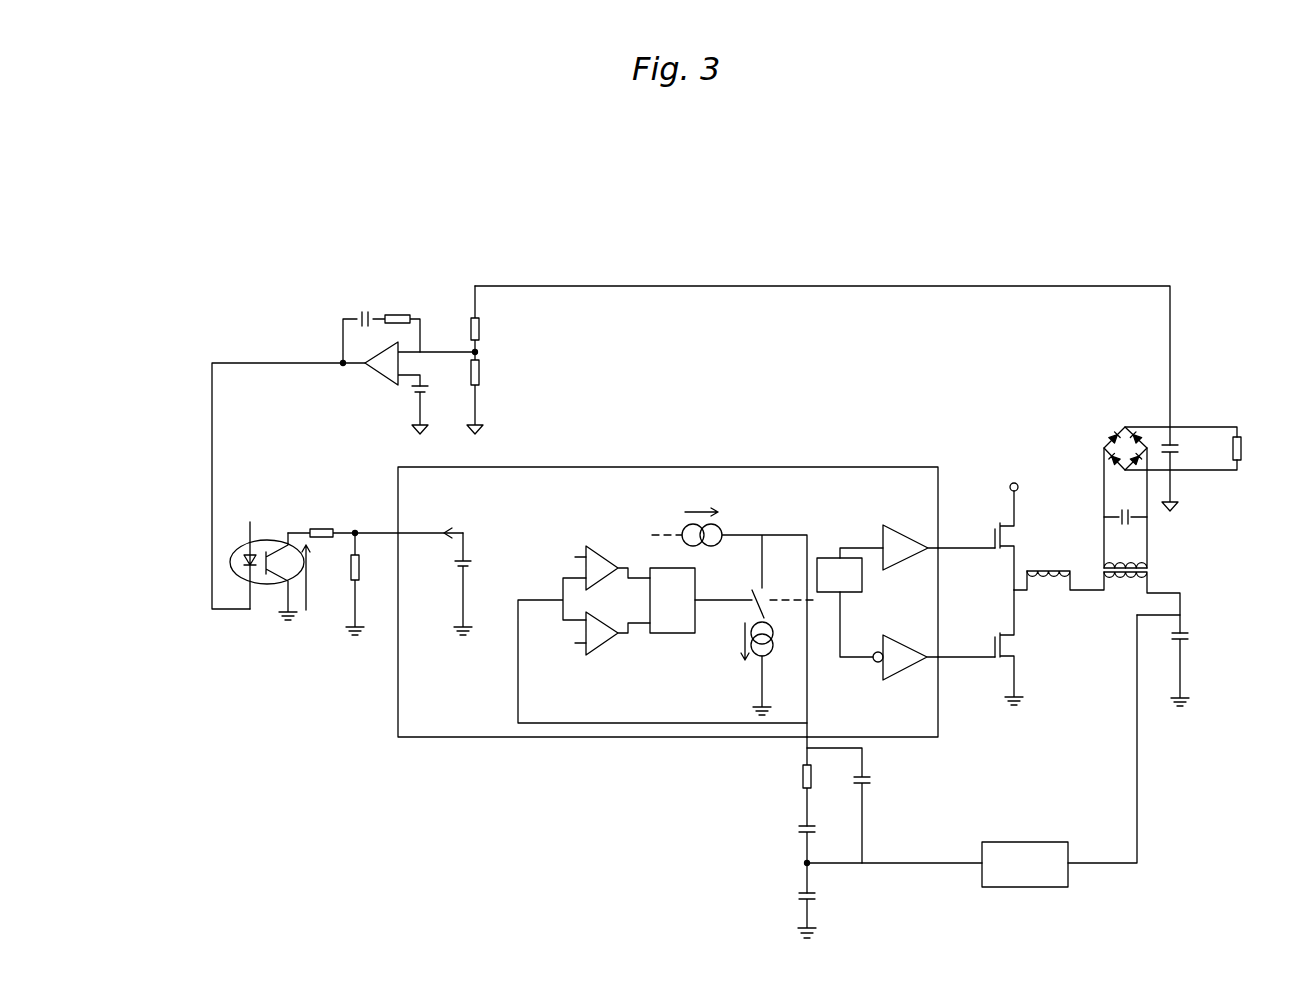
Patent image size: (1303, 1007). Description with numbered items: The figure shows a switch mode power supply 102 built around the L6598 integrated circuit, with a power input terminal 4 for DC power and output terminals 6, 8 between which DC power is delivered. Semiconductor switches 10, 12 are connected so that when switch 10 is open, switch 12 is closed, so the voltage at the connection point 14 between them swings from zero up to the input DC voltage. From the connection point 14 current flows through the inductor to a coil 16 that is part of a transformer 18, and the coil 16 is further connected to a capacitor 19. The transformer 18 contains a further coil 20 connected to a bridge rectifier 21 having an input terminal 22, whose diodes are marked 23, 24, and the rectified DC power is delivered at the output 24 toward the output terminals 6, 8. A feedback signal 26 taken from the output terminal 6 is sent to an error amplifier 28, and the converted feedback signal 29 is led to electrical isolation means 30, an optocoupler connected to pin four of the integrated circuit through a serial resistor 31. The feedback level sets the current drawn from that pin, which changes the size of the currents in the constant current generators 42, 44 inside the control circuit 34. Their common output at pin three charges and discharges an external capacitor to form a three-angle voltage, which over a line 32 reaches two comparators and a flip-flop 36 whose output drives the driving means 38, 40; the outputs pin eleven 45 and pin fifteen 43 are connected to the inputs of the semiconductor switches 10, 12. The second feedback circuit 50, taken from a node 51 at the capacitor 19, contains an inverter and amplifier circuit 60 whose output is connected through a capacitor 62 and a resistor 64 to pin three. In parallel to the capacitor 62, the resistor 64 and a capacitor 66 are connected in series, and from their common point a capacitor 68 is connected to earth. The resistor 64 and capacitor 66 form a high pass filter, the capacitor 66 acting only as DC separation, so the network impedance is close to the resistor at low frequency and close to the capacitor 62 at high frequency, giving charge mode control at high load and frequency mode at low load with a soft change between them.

The power converter circuit 102 is at (1071, 119).
The feedback signal 26 is at (776, 262).
The error amplifier 28 is at (440, 300).
The converted feedback signal 29 is at (243, 333).
The electrical isolation means 30 is at (268, 513).
The frequency setting resistor 31 is at (362, 530).
The line 32 is at (518, 665).
The control circuit 34 is at (619, 528).
The flip-flop 36 is at (822, 605).
The driving means 38 is at (893, 680).
The driving means 40 is at (903, 535).
The constant current generator 42 is at (725, 523).
The constant current generator 44 is at (770, 660).
The pin 15 43 is at (953, 552).
The pin 11 45 is at (950, 632).
The semiconductor switch 10 is at (992, 522).
The semiconductor switch 12 is at (990, 668).
The connection point 14 is at (1020, 592).
The power input terminal 4 is at (1020, 488).
The coil 16 is at (1100, 572).
The transformer 18 is at (1153, 567).
The coil 20 is at (1117, 562).
The bridge rectifier 21 is at (1101, 410).
The input terminal 22 is at (1097, 445).
The diode 23 is at (1150, 440).
The output 24 is at (1138, 425).
The output terminal 6 is at (1205, 425).
The output terminal 8 is at (1205, 472).
The capacitor 19 is at (1183, 645).
The sense node 51 is at (1183, 613).
The second feedback circuit 50 is at (1156, 811).
The inverter and amplifier circuit 60 is at (1040, 895).
The capacitor 62 is at (870, 781).
The resistor 64 is at (790, 800).
The capacitor 66 is at (790, 832).
The capacitor 68 is at (790, 900).